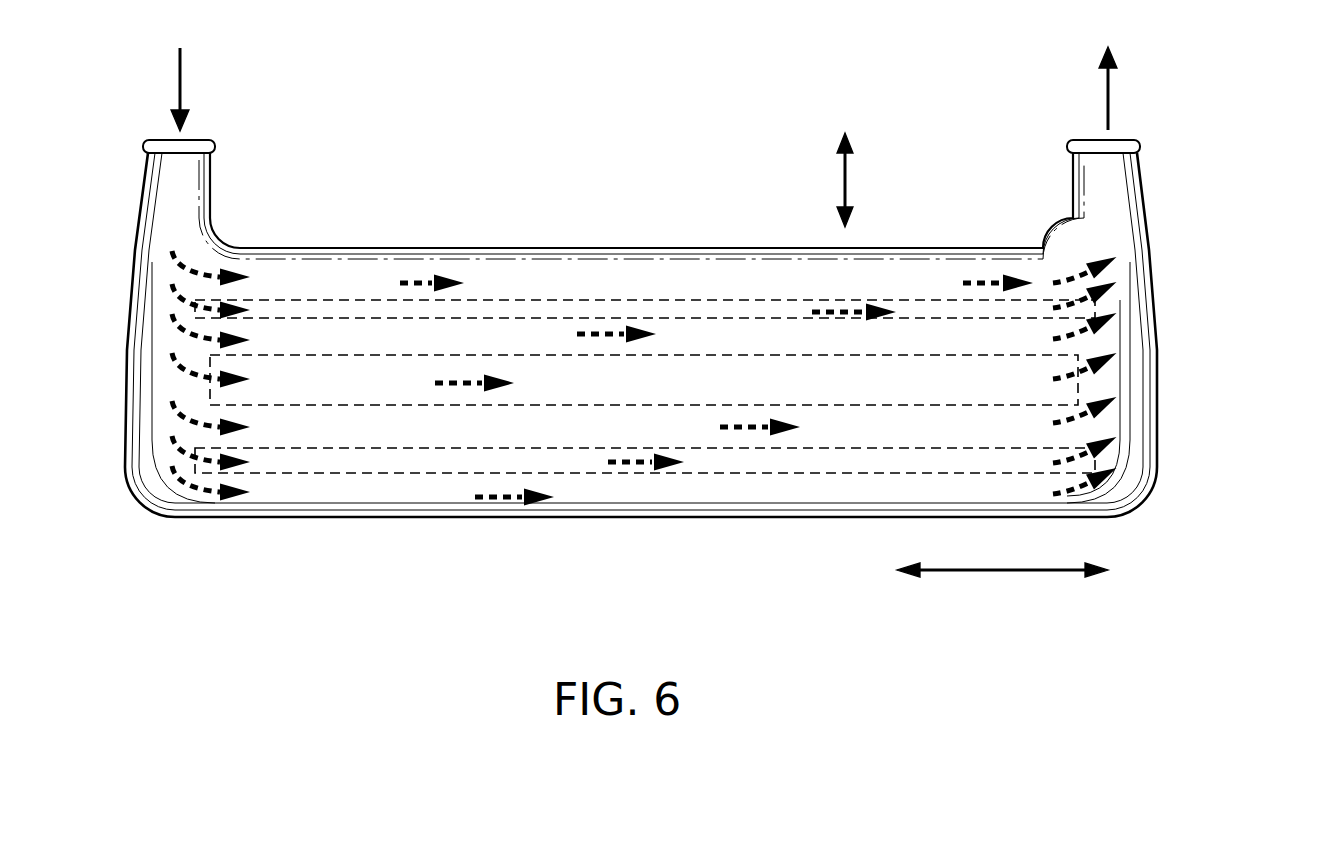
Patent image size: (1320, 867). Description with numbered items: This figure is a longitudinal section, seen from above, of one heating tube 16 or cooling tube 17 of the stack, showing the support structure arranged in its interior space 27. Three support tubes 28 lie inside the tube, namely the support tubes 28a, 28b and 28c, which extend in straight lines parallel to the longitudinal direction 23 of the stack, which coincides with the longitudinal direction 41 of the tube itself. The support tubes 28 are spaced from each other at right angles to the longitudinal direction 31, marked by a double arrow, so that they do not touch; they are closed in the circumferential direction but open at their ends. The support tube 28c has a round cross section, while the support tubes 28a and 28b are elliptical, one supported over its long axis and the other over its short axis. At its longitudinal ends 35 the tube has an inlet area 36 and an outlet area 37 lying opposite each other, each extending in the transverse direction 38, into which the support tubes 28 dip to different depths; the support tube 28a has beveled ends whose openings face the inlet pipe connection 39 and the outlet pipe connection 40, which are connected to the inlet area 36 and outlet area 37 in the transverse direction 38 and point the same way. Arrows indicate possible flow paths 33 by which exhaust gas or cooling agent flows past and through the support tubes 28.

The heating tube 16 is at (686, 282).
The cooling tube 17 is at (1183, 285).
The longitudinal direction of the stack 23 is at (1014, 589).
The interior space 27 is at (693, 272).
The support tubes 28 is at (995, 447).
The support tube 28a is at (553, 300).
The support tube 28b is at (744, 355).
The support tube 28c is at (365, 478).
The longitudinal direction of the tube 31 is at (1014, 589).
The flow paths 33 is at (195, 270).
The longitudinal ends 35 is at (123, 407).
The inlet area 36 is at (150, 425).
The outlet area 37 is at (1137, 383).
The transverse direction of the tube 38 is at (848, 180).
The inlet pipe connection 39 is at (214, 176).
The outlet pipe connection 40 is at (1072, 172).
The longitudinal direction of the tube 41 is at (977, 572).